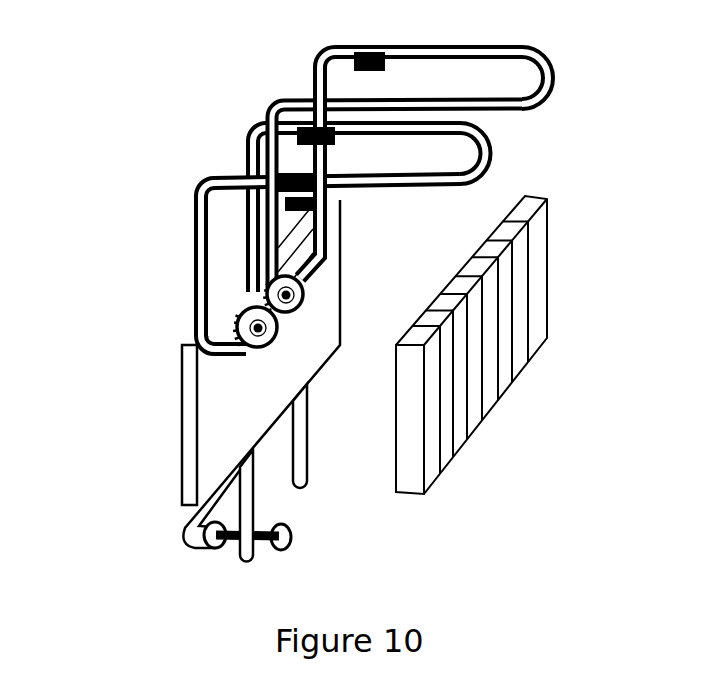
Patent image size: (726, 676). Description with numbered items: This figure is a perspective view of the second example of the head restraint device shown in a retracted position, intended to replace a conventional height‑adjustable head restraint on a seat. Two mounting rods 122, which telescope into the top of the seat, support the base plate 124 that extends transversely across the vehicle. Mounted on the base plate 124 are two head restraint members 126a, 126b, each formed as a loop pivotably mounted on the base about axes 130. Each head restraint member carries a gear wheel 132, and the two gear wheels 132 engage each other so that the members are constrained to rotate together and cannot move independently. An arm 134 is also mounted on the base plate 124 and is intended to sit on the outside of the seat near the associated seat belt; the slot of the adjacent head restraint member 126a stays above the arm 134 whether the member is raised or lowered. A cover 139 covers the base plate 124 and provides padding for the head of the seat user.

The mounting rods 122 is at (313, 459).
The base plate 124 is at (215, 407).
The head restraint member 126a is at (178, 200).
The head restraint member 126b is at (317, 57).
The axes 130 is at (292, 298).
The gear wheel 132 is at (297, 287).
The arm 134 is at (265, 550).
The cover 139 is at (530, 302).